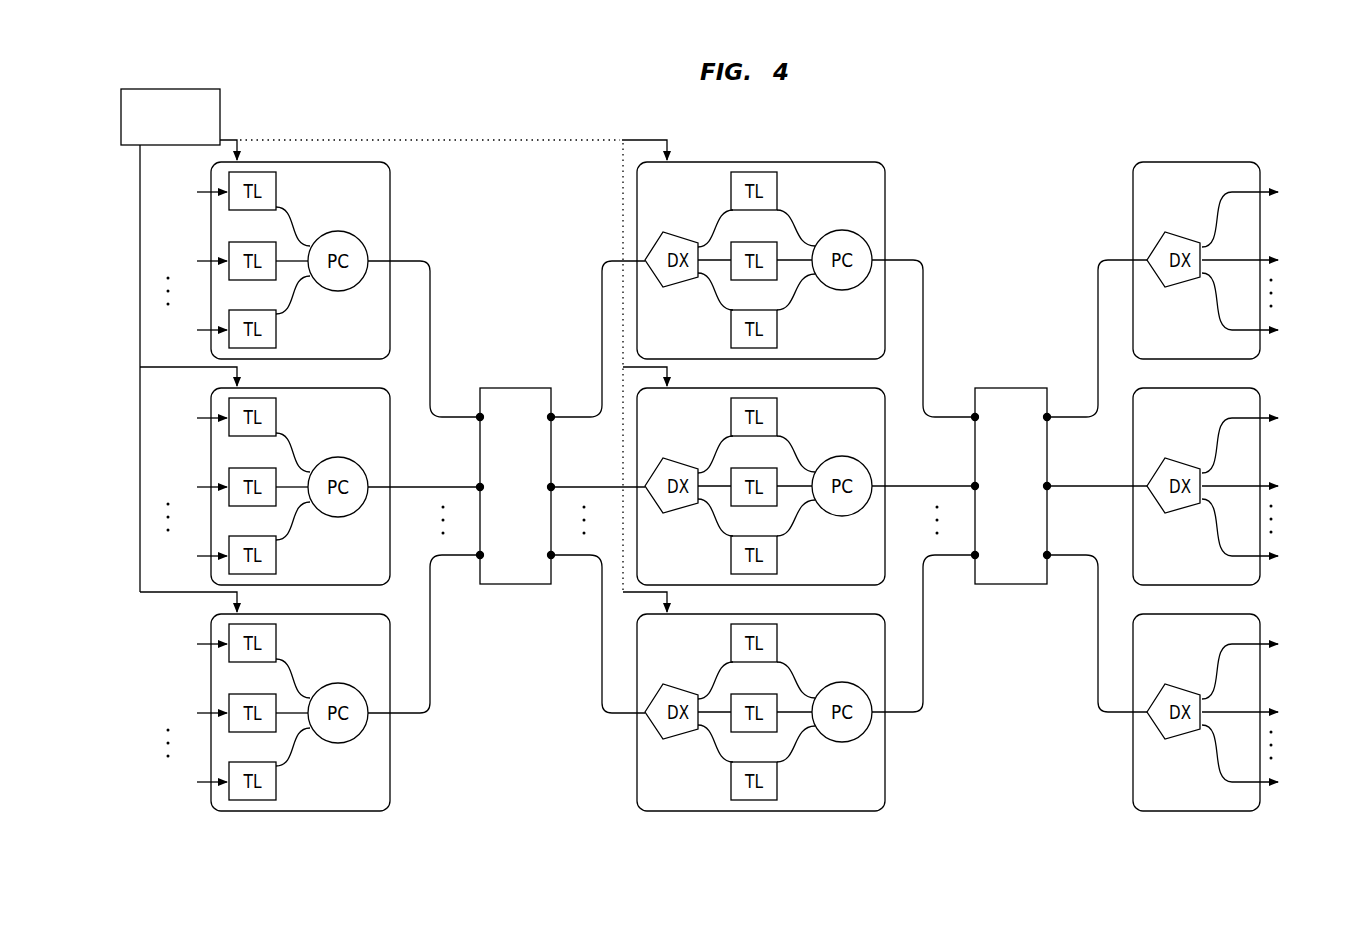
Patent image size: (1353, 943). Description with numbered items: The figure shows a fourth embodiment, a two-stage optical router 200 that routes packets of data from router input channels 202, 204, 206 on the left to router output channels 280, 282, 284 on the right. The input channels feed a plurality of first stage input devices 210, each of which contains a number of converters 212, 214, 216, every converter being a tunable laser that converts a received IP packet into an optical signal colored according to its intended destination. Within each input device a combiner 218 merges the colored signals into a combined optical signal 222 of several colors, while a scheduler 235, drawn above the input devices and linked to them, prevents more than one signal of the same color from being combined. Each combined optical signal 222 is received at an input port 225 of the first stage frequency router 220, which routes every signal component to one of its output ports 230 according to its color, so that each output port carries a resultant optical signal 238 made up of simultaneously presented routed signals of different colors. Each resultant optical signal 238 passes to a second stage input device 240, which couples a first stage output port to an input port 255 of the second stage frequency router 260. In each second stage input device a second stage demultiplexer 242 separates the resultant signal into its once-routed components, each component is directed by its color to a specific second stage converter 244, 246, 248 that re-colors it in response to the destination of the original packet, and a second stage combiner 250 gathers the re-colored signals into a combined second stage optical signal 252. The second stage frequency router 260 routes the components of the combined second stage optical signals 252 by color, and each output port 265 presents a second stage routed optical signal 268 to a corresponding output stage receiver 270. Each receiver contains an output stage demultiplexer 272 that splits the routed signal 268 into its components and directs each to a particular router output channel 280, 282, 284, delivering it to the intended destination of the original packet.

The optical router 200 is at (1007, 121).
The scheduler 235 is at (394, 350).
The router input channels 202 is at (187, 263).
The router input channels 204 is at (187, 489).
The router input channels 206 is at (187, 715).
The first stage input devices 210 is at (390, 217).
The converters 212 is at (267, 242).
The converters 214 is at (267, 468).
The converters 216 is at (267, 694).
The combiner 218 is at (338, 291).
The first stage frequency router 220 is at (500, 585).
The combined optical signal 222 is at (431, 302).
The input ports 225 is at (480, 417).
The output ports 230 is at (551, 417).
The resultant optical signal 238 is at (601, 302).
The second stage input devices 240 is at (885, 217).
The second stage demultiplexer 242 is at (676, 288).
The second stage converters 244 is at (778, 182).
The second stage converters 246 is at (778, 408).
The second stage converters 248 is at (778, 634).
The second stage combiner 250 is at (842, 290).
The combined second stage optical signal 252 is at (924, 302).
The input ports 255 is at (974, 417).
The second stage frequency router 260 is at (998, 585).
The output ports 265 is at (1047, 417).
The second stage routed optical signal 268 is at (1097, 302).
The output stage receivers 270 is at (1258, 165).
The output stage demultiplexer 272 is at (1181, 288).
The router output channels 280 is at (1265, 263).
The router output channels 282 is at (1265, 489).
The router output channels 284 is at (1265, 715).